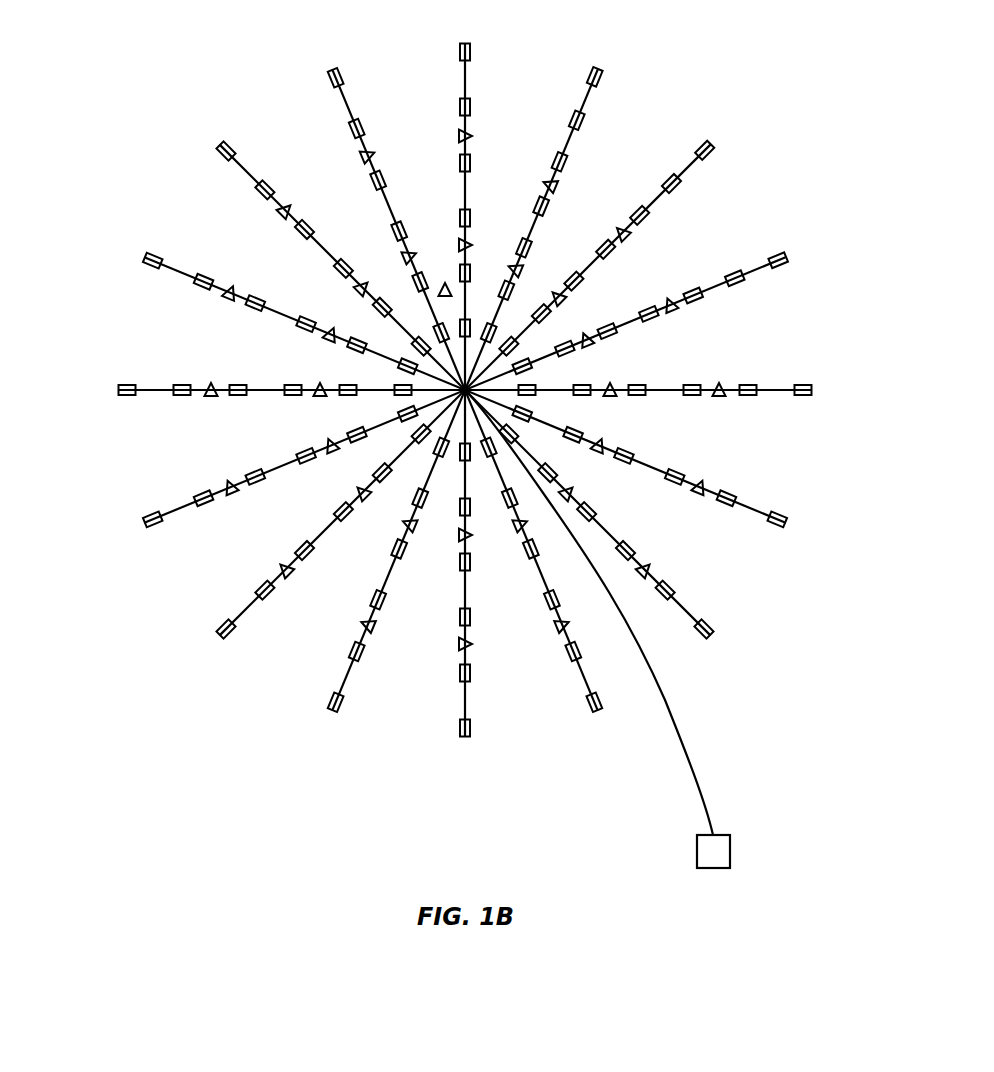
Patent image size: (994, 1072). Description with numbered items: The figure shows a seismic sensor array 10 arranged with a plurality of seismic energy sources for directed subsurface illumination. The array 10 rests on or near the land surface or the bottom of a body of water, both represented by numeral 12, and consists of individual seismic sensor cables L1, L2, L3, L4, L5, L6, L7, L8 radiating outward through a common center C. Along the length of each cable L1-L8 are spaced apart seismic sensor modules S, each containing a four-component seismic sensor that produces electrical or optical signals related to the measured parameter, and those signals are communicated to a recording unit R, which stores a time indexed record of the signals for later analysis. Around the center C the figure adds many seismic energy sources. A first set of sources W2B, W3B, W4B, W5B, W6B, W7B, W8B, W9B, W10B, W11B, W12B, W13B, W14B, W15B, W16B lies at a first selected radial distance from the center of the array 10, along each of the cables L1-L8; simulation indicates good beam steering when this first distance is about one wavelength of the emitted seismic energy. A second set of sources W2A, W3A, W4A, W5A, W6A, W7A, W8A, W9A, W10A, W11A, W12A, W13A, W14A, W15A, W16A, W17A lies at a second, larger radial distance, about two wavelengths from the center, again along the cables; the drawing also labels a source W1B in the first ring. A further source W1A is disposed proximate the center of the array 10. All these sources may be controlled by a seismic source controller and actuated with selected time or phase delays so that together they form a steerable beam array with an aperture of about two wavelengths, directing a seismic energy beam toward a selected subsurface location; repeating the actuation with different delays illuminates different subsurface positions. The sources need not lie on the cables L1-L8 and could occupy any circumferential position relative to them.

The seismic sensor array 10 is at (133, 812).
The land surface or water bottom 12 is at (894, 737).
The center of the sensor array C is at (465, 392).
The recording unit R is at (731, 852).
The seismic sensor module S is at (465, 44).
The seismic sensor cable L1 is at (250, 608).
The seismic sensor cable L2 is at (343, 673).
The seismic sensor cable L3 is at (466, 697).
The seismic sensor cable L4 is at (588, 677).
The seismic sensor cable L5 is at (683, 612).
The seismic sensor cable L6 is at (755, 505).
The seismic sensor cable L7 is at (772, 383).
The seismic sensor cable L8 is at (756, 277).
The seismic energy source W1A is at (443, 283).
The well W1B is at (360, 493).
The second seismic energy source W2A is at (290, 575).
The first seismic energy source W2B is at (404, 523).
The second seismic energy source W3A is at (372, 624).
The first seismic energy source W3B is at (457, 537).
The second seismic energy source W4A is at (459, 647).
The first seismic energy source W4B is at (516, 531).
The second seismic energy source W5A is at (561, 631).
The first seismic energy source W5B is at (573, 491).
The second seismic energy source W6A is at (648, 570).
The first seismic energy source W6B is at (600, 438).
The second seismic energy source W7A is at (698, 500).
The first seismic energy source W7B is at (609, 385).
The second seismic energy source W8A is at (718, 398).
The first seismic energy source W8B is at (590, 338).
The second seismic energy source W9A is at (673, 313).
The first seismic energy source W9B is at (556, 295).
The second seismic energy source W10A is at (627, 237).
The first seismic energy source W10B is at (513, 268).
The second seismic energy source W11A is at (558, 188).
The first seismic energy source W11B is at (473, 244).
The second seismic energy source W12A is at (456, 134).
The first seismic energy source W12B is at (402, 257).
The second seismic energy source W13A is at (362, 153).
The first seismic energy source W13B is at (356, 291).
The second seismic energy source W14A is at (280, 208).
The first seismic energy source W14B is at (329, 343).
The second seismic energy source W15A is at (226, 300).
The first seismic energy source W15B is at (318, 397).
The second seismic energy source W16A is at (208, 397).
The first seismic energy source W16B is at (333, 452).
The second seismic energy source W17A is at (227, 490).